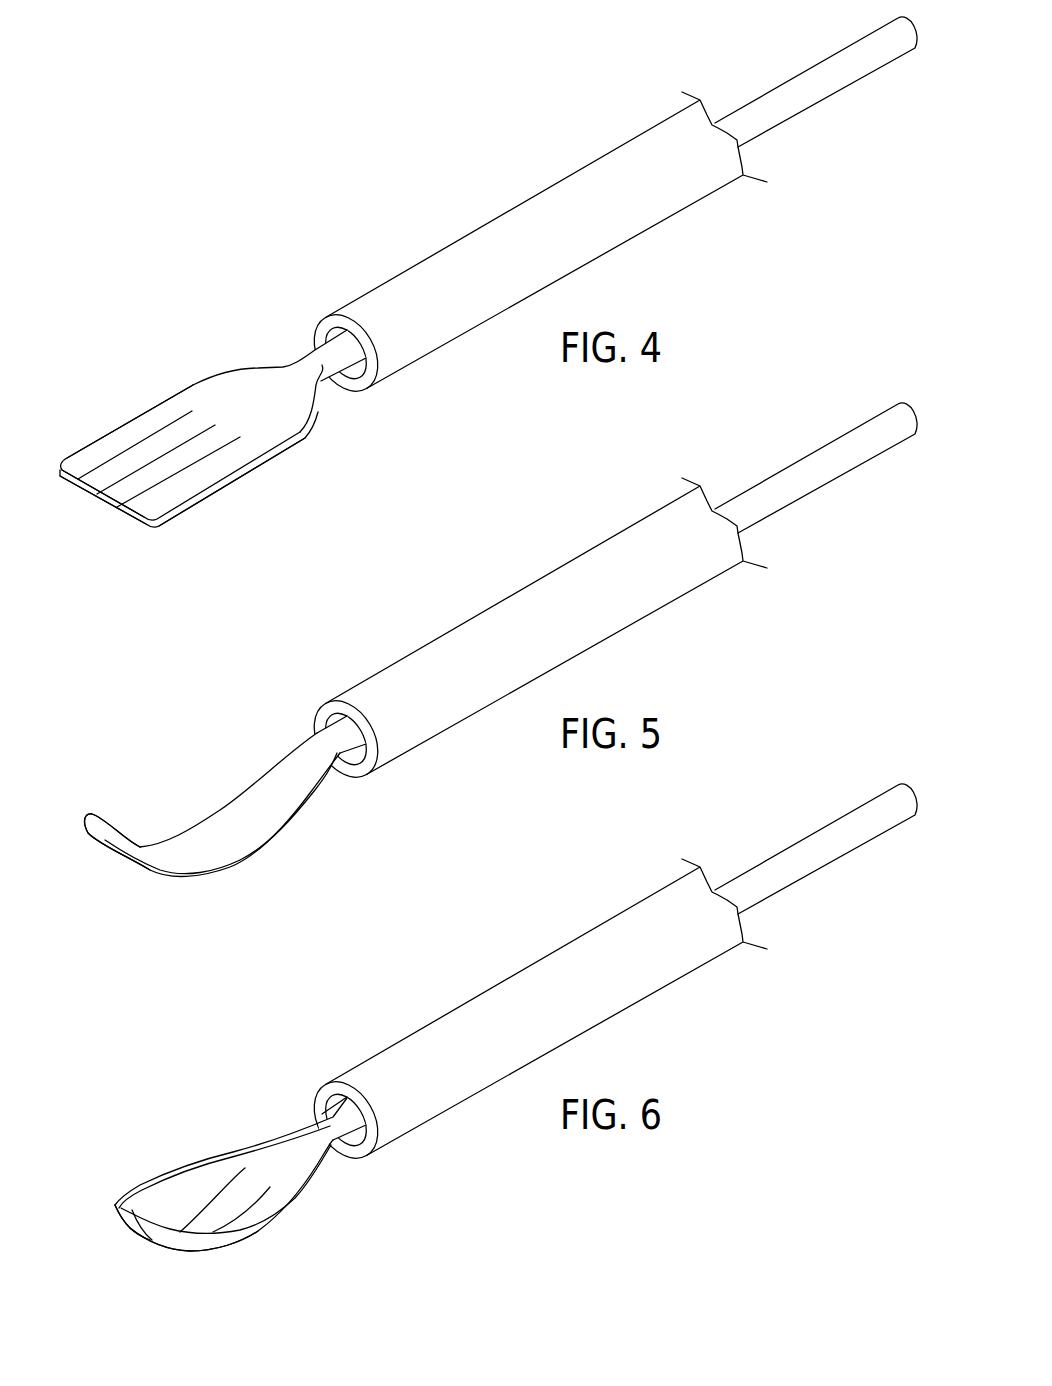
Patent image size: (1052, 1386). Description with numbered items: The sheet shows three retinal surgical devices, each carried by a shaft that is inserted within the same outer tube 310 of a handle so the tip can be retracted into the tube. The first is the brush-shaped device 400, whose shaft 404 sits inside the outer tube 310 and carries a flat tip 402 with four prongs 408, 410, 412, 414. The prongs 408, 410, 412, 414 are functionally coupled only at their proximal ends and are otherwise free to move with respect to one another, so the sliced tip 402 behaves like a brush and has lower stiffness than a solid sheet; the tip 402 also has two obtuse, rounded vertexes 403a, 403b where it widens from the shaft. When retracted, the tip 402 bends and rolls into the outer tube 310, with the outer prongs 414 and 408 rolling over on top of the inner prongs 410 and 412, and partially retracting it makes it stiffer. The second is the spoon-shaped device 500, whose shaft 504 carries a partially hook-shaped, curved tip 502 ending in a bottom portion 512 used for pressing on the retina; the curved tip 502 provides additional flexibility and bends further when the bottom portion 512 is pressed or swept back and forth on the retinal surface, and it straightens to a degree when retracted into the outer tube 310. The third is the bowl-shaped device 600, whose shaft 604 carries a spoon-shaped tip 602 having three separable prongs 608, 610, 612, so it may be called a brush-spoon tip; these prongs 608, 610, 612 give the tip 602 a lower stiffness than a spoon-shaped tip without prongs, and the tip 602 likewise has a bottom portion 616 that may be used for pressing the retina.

In FIG. 4, the outer tube 310 is at (475, 245).
In FIG. 5, the outer tube 310 is at (534, 633).
In FIG. 6, the outer tube 310 is at (534, 1014).
In FIG. 4, the device 400 is at (308, 365).
In FIG. 4, the tip 402 is at (145, 408).
In FIG. 4, the vertex 403a is at (208, 387).
In FIG. 4, the vertex 403b is at (272, 433).
In FIG. 4, the shaft 404 is at (750, 100).
In FIG. 4, the prong 408 is at (73, 469).
In FIG. 4, the prong 410 is at (97, 478).
In FIG. 4, the prong 412 is at (122, 494).
In FIG. 4, the prong 414 is at (150, 508).
In FIG. 5, the device 500 is at (317, 750).
In FIG. 5, the tip 502 is at (158, 815).
In FIG. 5, the shaft 504 is at (812, 468).
In FIG. 5, the bottom portion 512 is at (120, 858).
In FIG. 6, the device 600 is at (333, 1118).
In FIG. 6, the tip 602 is at (185, 1138).
In FIG. 6, the shaft 604 is at (812, 849).
In FIG. 6, the prong 608 is at (115, 1217).
In FIG. 6, the prong 610 is at (145, 1227).
In FIG. 6, the prong 612 is at (200, 1240).
In FIG. 6, the bottom portion 616 is at (160, 1277).